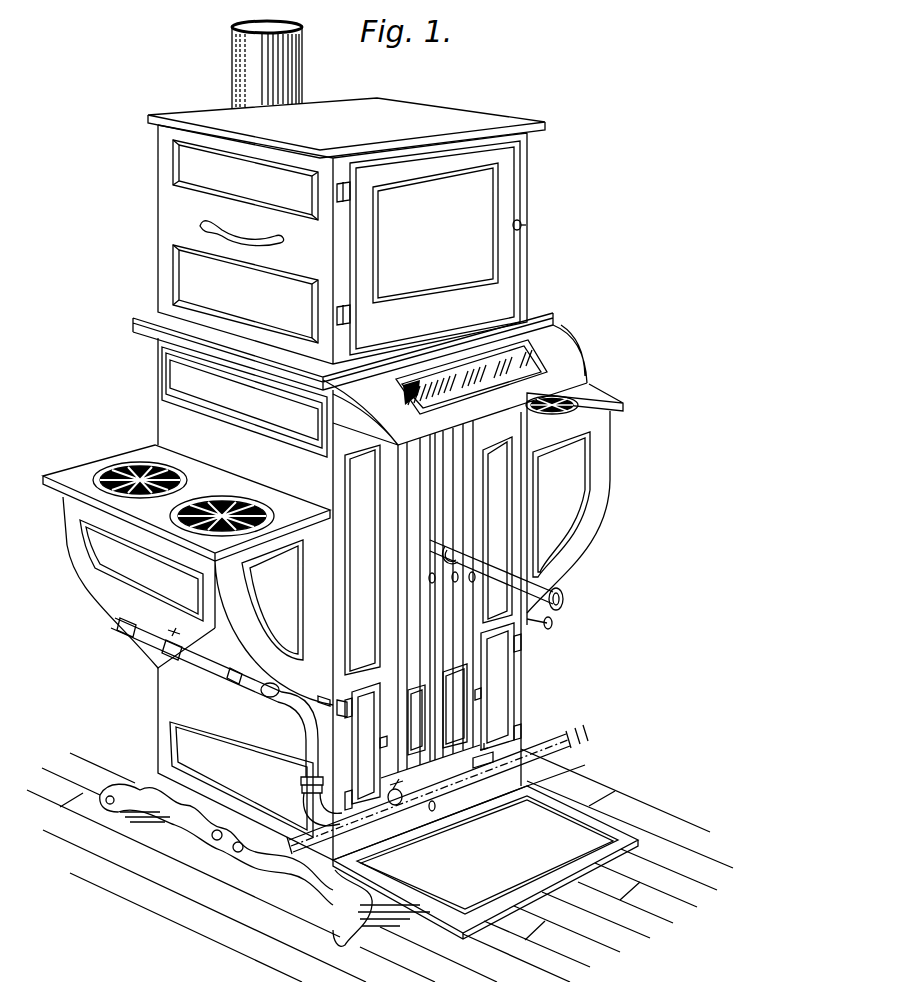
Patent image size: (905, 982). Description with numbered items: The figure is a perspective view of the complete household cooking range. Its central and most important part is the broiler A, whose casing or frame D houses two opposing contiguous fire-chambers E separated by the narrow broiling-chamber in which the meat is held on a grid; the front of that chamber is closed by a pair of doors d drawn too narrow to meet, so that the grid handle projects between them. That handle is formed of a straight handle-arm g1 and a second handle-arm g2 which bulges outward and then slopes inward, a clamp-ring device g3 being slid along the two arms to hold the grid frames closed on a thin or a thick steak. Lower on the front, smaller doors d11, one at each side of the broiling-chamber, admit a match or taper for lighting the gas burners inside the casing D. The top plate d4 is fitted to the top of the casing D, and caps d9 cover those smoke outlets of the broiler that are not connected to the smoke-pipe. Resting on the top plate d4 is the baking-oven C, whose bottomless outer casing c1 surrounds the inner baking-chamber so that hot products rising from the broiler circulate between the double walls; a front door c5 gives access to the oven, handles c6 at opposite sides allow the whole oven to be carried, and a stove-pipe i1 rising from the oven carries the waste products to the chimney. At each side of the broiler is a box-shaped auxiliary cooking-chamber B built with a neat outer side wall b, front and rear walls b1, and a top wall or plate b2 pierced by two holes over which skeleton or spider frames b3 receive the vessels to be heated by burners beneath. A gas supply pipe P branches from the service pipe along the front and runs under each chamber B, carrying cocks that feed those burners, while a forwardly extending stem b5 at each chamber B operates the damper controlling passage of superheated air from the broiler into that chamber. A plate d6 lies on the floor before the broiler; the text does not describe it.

The stove-pipe i1 is at (240, 68).
The baking-oven C is at (523, 224).
The outer casing c1 is at (263, 226).
The front door c5 is at (435, 233).
The handles c6 is at (228, 231).
The top plate d4 is at (140, 326).
The broiler A is at (361, 592).
The doors d is at (437, 709).
The fire-chambers E is at (471, 377).
The caps d9 is at (244, 402).
The casing D is at (341, 640).
The doors d11 is at (533, 680).
The side-bracket cooking-chambers B is at (74, 552).
The top wall or plate b2 is at (630, 393).
The spider frames b3 is at (210, 497).
The outer side wall b is at (160, 623).
The front and rear walls b1 is at (416, 546).
The damper stem b5 is at (552, 626).
The handle-arm g1 is at (563, 594).
The handle-arm g2 is at (466, 577).
The clamp-ring device g3 is at (444, 553).
The gas supply pipe P is at (176, 640).
The floor plate d6 is at (485, 862).